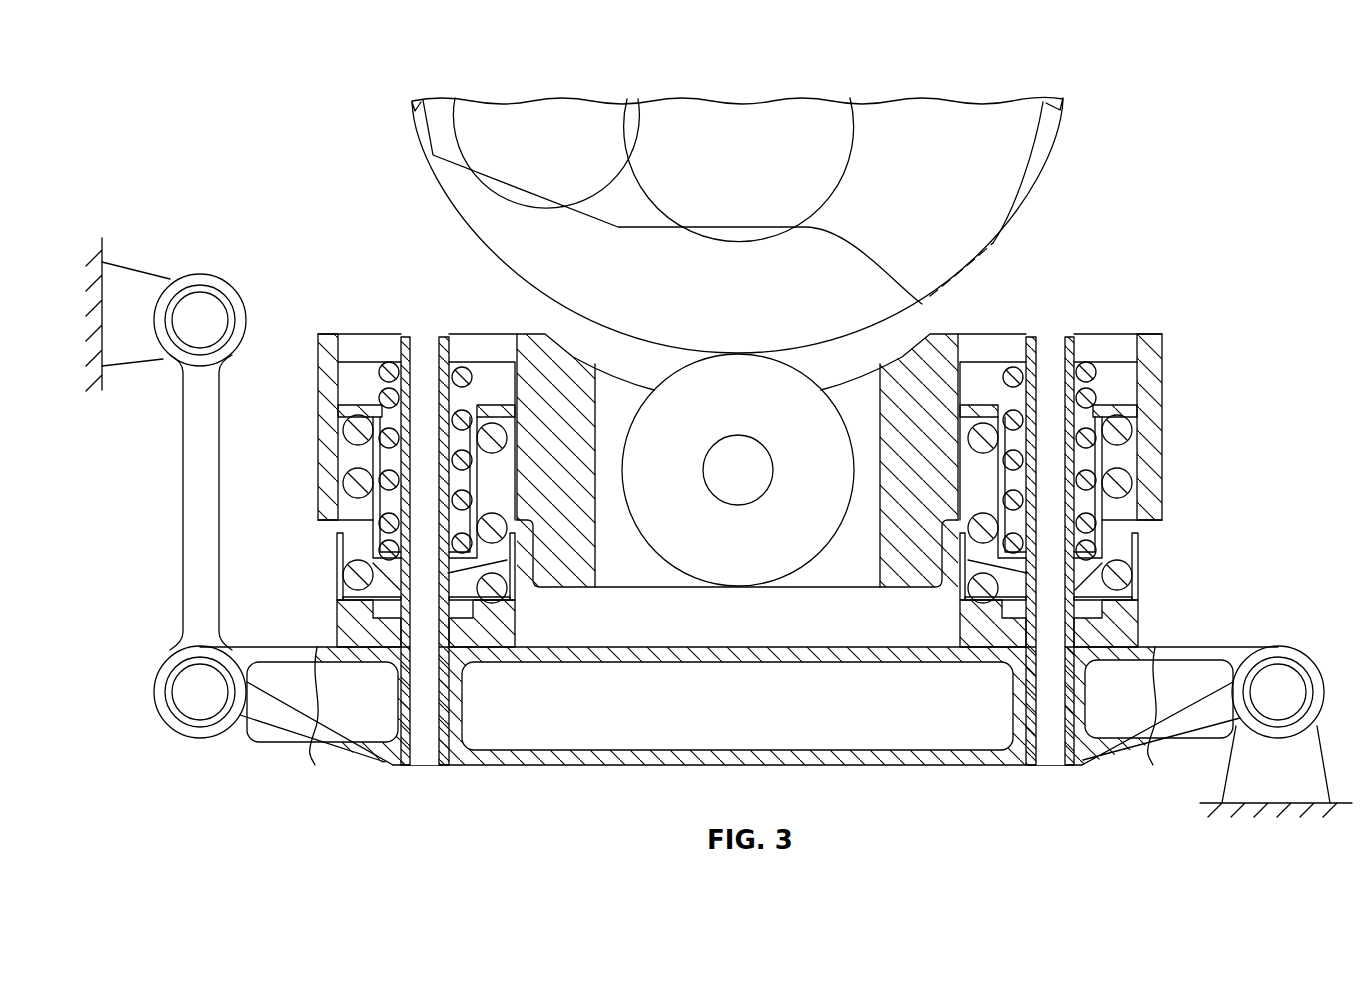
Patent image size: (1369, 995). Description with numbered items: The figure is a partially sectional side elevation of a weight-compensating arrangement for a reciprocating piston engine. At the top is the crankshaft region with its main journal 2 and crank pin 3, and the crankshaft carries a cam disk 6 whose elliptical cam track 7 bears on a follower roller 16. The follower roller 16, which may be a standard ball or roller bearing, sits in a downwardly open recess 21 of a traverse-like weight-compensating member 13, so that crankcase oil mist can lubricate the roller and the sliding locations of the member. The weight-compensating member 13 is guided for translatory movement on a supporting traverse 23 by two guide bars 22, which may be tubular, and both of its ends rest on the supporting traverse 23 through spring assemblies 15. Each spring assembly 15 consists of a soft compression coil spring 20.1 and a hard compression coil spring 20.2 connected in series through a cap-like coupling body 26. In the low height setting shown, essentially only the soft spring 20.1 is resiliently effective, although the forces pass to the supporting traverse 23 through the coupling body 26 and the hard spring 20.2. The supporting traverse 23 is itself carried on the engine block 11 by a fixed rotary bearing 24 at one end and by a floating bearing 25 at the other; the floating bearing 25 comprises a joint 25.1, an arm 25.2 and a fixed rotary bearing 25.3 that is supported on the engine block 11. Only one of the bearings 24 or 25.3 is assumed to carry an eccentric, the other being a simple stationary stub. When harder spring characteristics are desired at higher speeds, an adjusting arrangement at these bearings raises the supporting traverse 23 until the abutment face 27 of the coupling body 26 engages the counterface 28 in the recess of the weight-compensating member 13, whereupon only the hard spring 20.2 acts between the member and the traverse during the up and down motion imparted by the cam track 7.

The main journal 2 is at (763, 118).
The crank pin 3 is at (565, 110).
The cam disk 6 is at (470, 182).
The cam track 7 is at (460, 228).
The engine block 11 is at (102, 237).
The weight-compensating member 13 is at (952, 350).
The spring assembly 15 is at (759, 443).
The follower roller 16 is at (726, 547).
The soft compression coil spring 20.1 is at (1107, 520).
The hard compression coil spring 20.2 is at (1127, 483).
The recess 21 is at (848, 557).
The guide bar 22 is at (422, 357).
The supporting traverse 23 is at (975, 755).
The fixed rotary bearing 24 is at (1290, 640).
The floating bearing 25 is at (234, 498).
The joint 25.1 is at (202, 707).
The arm 25.2 is at (185, 512).
The fixed rotary bearing 25.3 is at (190, 310).
The cap-like coupling body 26 is at (1120, 470).
The abutment face 27 is at (1150, 408).
The counterface 28 is at (1137, 363).